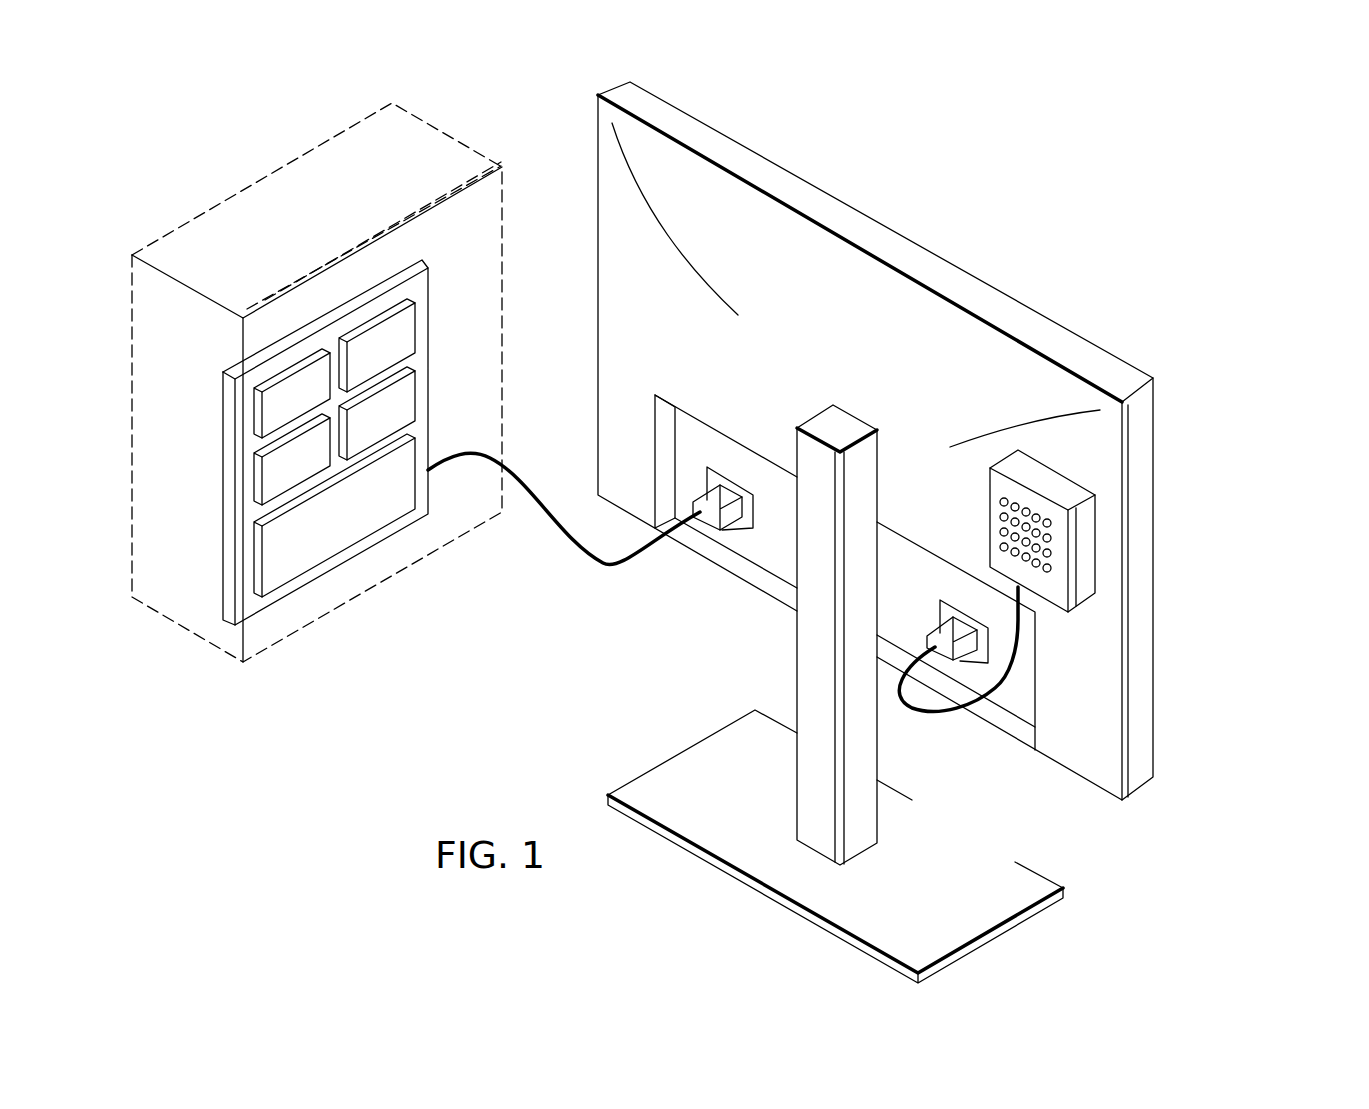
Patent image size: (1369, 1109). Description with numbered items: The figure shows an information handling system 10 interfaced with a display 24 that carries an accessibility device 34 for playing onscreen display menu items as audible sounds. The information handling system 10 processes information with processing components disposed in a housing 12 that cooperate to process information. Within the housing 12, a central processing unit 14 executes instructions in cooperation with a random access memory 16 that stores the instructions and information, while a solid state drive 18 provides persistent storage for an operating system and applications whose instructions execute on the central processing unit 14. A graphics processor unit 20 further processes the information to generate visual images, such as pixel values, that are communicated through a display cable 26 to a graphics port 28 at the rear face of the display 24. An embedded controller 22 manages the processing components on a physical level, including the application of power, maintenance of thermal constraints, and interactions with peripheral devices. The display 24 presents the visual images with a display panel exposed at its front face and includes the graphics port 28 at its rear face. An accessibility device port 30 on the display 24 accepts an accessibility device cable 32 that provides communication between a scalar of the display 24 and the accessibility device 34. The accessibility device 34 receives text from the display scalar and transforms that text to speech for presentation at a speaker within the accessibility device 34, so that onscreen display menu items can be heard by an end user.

The information handling system 10 is at (213, 184).
The housing 12 is at (151, 611).
The central processing unit 14 is at (270, 415).
The random access memory 16 is at (268, 488).
The solid state drive 18 is at (410, 332).
The graphics processor unit 20 is at (410, 400).
The embedded controller 22 is at (267, 560).
The display 24 is at (902, 237).
The display cable 26 is at (567, 548).
The graphics port 28 is at (713, 477).
The accessibility device port 30 is at (947, 608).
The accessibility device cable 32 is at (948, 712).
The accessibility device 34 is at (1085, 547).